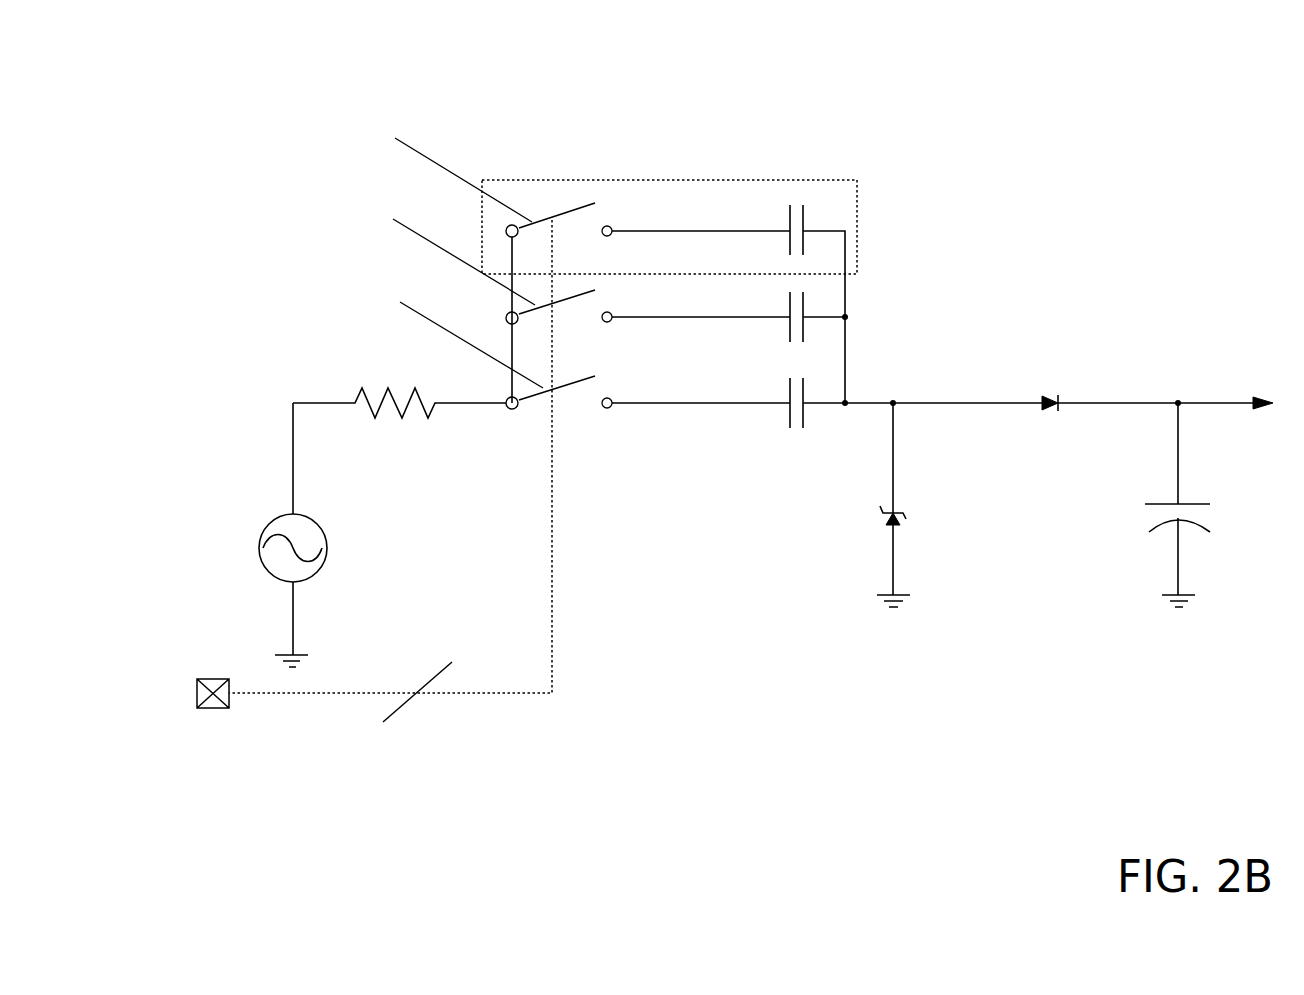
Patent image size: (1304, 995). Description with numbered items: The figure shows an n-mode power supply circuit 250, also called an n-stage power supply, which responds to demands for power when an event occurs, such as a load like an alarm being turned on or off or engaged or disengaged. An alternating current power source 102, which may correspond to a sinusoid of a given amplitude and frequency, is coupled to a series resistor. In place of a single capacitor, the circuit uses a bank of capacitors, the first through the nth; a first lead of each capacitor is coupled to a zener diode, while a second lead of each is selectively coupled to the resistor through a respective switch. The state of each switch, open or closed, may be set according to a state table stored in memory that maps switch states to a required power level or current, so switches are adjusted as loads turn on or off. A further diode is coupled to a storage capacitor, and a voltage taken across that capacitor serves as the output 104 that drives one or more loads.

The power supply circuit 250 is at (631, 70).
The alternating current power source 102 is at (259, 543).
The output 104 is at (1250, 384).